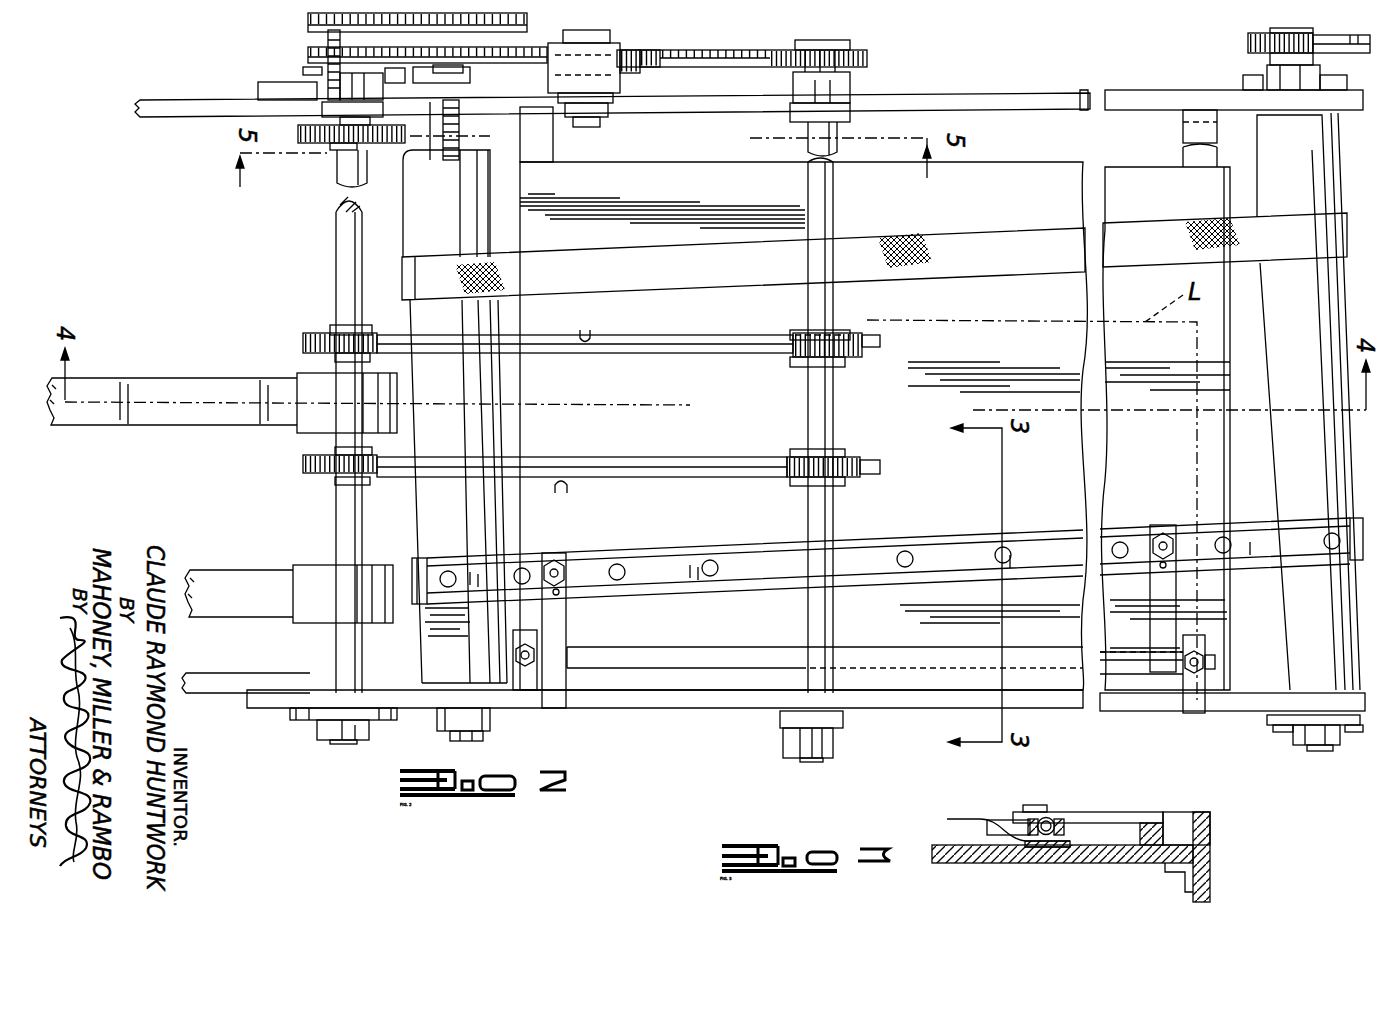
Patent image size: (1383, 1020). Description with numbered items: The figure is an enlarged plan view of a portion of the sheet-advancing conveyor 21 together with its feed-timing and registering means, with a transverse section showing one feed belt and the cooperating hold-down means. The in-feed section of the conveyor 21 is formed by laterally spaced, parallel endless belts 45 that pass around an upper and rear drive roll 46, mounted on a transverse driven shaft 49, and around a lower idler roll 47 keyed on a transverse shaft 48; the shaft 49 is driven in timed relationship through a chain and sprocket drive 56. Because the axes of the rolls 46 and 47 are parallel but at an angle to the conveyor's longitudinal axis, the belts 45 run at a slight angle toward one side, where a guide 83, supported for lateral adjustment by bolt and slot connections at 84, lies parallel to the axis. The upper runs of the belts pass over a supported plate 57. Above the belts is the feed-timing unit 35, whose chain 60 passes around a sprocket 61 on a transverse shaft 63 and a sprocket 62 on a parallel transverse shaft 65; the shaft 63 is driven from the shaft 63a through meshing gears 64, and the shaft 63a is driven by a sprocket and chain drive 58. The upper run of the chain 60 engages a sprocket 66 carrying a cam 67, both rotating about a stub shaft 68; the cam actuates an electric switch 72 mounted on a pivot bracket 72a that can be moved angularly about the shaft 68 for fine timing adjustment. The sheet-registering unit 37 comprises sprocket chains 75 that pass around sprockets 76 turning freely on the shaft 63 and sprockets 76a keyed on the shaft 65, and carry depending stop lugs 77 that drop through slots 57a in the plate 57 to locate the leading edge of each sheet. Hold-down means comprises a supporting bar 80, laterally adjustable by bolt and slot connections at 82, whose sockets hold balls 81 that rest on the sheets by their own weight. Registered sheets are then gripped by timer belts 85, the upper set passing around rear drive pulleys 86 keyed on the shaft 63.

In FIG. 2, the sheet-advancing conveyor 21 is at (643, 673).
In FIG. 2, the feed-timing unit 35 is at (778, 42).
In FIG. 2, the sheet-registering unit 37 is at (713, 447).
In FIG. 2, the endless belts 45 is at (997, 242).
In FIG. 3, the endless belts 45 is at (991, 825).
In FIG. 2, the upper and rear drive roll 46 is at (1313, 188).
In FIG. 2, the lower idler roll 47 is at (482, 240).
In FIG. 2, the transverse shaft 48 is at (460, 124).
In FIG. 2, the transverse driven shaft 49 is at (1285, 30).
In FIG. 2, the chain and sprocket drive 56 is at (1338, 48).
In FIG. 2, the plate 57 is at (875, 426).
In FIG. 3, the plate 57 is at (1062, 855).
In FIG. 2, the slots 57a is at (578, 409).
In FIG. 2, the sprocket and chain drive 58 is at (532, 24).
In FIG. 2, the chain 60 is at (733, 50).
In FIG. 2, the sprocket 61 is at (308, 54).
In FIG. 2, the sprocket 62 is at (868, 60).
In FIG. 2, the transverse shaft 63 is at (345, 243).
In FIG. 2, the shaft 63a is at (336, 207).
In FIG. 2, the meshing gears 64 is at (302, 142).
In FIG. 2, the transverse shaft 65 is at (826, 208).
In FIG. 2, the sprocket 66 is at (658, 62).
In FIG. 2, the cam 67 is at (633, 72).
In FIG. 2, the stub shaft 68 is at (582, 128).
In FIG. 2, the electric switch 72 is at (600, 80).
In FIG. 2, the pivot arm or bracket 72a is at (610, 38).
In FIG. 2, the sprocket chains 75 is at (648, 337).
In FIG. 2, the sprocket 76 is at (312, 338).
In FIG. 2, the sprocket 76a is at (850, 334).
In FIG. 2, the stop dogs or lugs 77 is at (345, 328).
In FIG. 2, the supporting bar 80 is at (656, 558).
In FIG. 3, the supporting bar 80 is at (1003, 822).
In FIG. 2, the balls 81 is at (710, 584).
In FIG. 3, the balls 81 is at (1050, 820).
In FIG. 2, the bolt and slot connections 82 is at (566, 572).
In FIG. 2, the guide 83 is at (742, 655).
In FIG. 3, the guide 83 is at (1137, 823).
In FIG. 2, the bolt and slot connections 84 is at (538, 664).
In FIG. 2, the timer belts 85 is at (209, 378).
In FIG. 2, the rear drive pulleys 86 is at (306, 426).